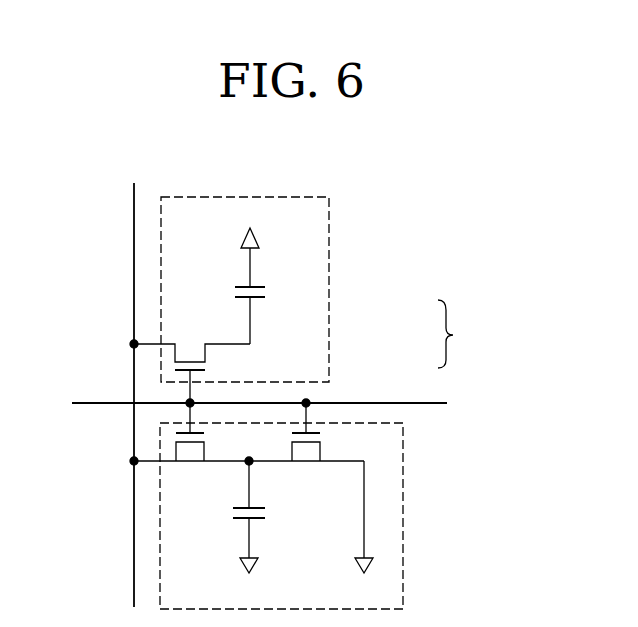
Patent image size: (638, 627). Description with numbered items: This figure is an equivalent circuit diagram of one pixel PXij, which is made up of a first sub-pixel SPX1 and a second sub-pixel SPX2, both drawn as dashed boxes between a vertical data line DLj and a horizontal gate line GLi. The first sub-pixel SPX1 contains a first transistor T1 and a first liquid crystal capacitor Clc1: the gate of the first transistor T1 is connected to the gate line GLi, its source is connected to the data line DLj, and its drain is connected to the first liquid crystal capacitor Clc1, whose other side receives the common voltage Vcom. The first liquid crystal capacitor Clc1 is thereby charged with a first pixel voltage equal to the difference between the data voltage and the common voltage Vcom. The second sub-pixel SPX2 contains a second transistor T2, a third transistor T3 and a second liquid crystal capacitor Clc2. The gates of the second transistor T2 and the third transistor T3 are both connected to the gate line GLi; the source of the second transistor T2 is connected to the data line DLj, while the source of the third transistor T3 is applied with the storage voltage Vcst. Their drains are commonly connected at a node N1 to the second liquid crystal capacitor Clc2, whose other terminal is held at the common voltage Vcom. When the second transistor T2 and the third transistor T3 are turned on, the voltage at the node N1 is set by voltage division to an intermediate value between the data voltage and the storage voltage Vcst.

The data line DLj is at (133, 381).
The gate line GLi is at (238, 404).
The first sub-pixel SPX1 is at (329, 312).
The second sub-pixel SPX2 is at (375, 423).
The pixel PXij is at (471, 334).
The first transistor T1 is at (190, 361).
The second transistor T2 is at (189, 447).
The third transistor T3 is at (306, 445).
The first liquid crystal capacitor Clc1 is at (277, 311).
The second liquid crystal capacitor Clc2 is at (276, 514).
The node N1 is at (248, 470).
The common voltage Vcom is at (251, 402).
The storage voltage Vcst is at (364, 532).